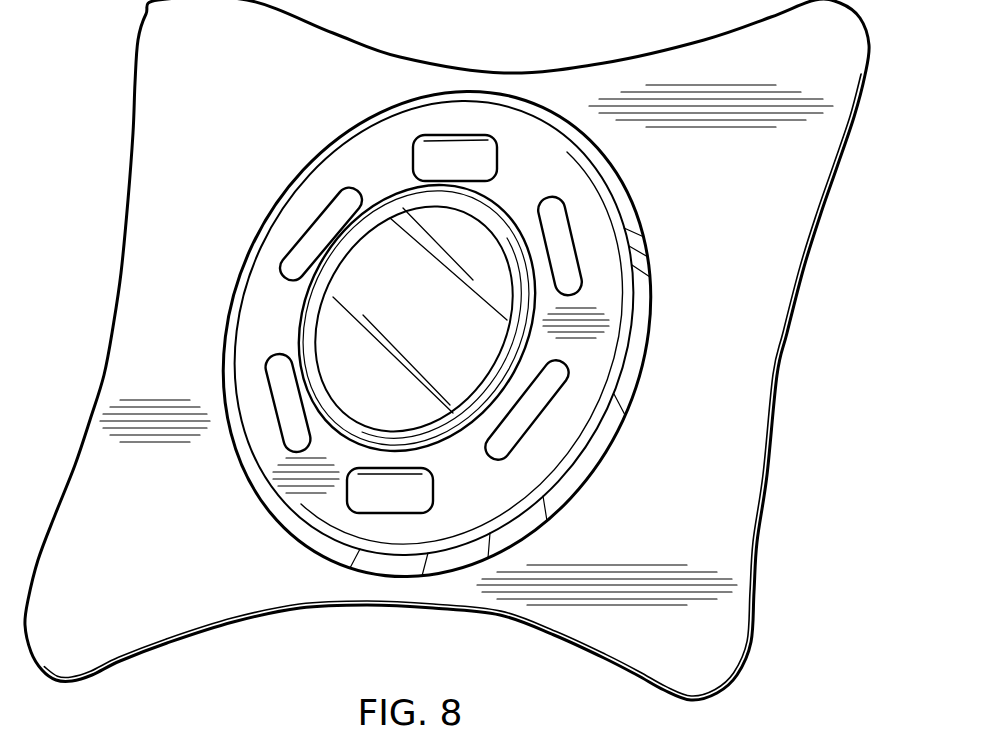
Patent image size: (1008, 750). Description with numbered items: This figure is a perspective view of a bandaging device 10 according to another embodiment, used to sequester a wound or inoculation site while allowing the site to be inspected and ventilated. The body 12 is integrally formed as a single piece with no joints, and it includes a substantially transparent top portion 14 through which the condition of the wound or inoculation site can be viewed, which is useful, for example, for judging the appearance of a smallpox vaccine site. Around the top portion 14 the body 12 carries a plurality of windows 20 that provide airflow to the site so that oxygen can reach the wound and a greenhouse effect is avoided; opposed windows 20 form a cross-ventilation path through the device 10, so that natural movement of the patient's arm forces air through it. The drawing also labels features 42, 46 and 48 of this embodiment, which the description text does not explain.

The bandaging device 10 is at (843, 421).
The body 12 is at (253, 318).
The top portion 14 is at (437, 314).
The window 20 is at (461, 150).
The slot 42 is at (397, 537).
The ring outer edge 46 is at (648, 282).
The pad perimeter edge 48 is at (764, 528).